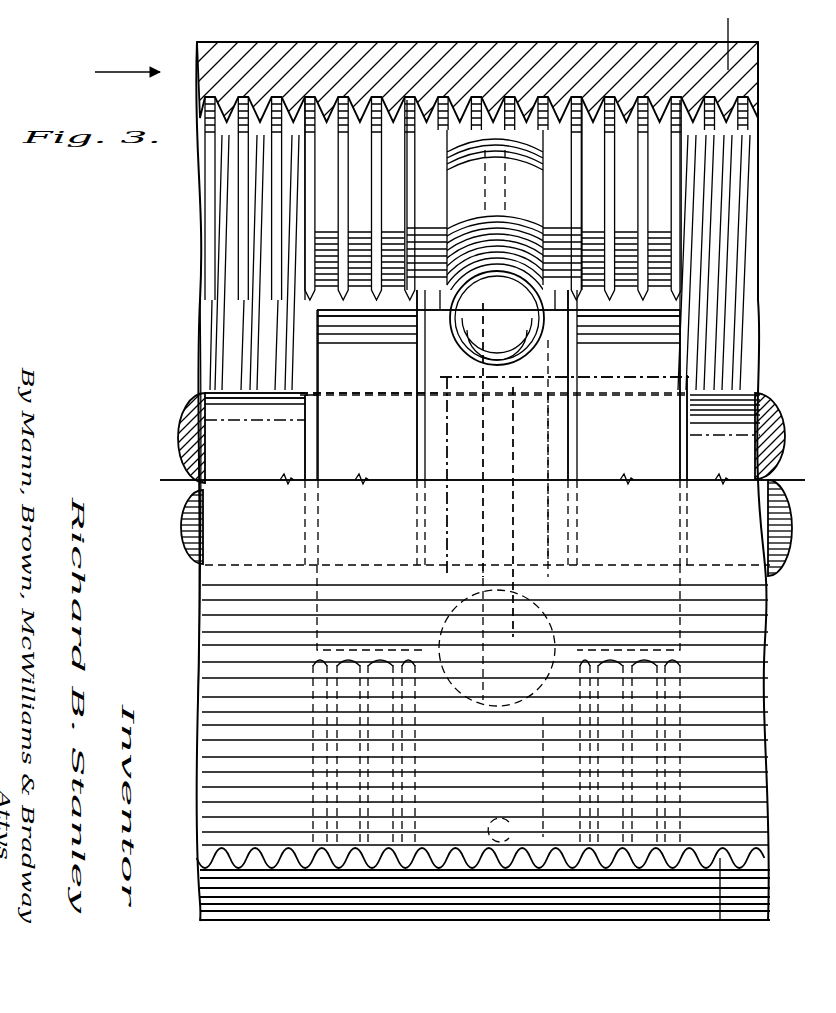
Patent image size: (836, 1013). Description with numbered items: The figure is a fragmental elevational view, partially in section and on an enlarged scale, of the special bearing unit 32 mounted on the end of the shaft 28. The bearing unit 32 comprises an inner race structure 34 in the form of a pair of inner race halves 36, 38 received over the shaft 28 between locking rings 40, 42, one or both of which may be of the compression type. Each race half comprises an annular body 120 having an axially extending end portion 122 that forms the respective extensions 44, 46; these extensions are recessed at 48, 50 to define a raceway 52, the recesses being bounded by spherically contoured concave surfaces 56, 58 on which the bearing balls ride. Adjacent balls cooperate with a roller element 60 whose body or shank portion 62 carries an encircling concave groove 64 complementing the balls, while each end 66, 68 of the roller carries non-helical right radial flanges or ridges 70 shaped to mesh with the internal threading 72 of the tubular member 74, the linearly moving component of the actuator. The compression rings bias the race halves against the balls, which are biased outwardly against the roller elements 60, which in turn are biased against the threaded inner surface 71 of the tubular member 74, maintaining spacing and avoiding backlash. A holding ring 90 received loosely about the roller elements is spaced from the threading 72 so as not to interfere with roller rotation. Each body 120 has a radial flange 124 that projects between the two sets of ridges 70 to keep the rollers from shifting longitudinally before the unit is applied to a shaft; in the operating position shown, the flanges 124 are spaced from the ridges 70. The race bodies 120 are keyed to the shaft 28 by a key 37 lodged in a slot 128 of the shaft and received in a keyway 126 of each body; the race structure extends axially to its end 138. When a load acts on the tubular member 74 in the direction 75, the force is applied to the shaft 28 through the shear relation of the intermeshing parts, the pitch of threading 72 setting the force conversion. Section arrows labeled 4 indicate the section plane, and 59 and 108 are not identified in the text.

The section line 4- 4 is at (702, 27).
The shaft 28 is at (735, 402).
The bearing unit 32 is at (292, 289).
The inner race structure 34 is at (395, 473).
The inner race half 36 is at (345, 447).
The key 37 is at (545, 372).
The inner race half 38 is at (650, 454).
The locking ring 40 is at (300, 432).
The locking ring 42 is at (760, 432).
The extension 44 is at (432, 408).
The extension 46 is at (556, 400).
The recess 48 is at (465, 452).
The recess 50 is at (540, 462).
The raceway 52 is at (470, 470).
The spherically contoured concave surface 56 is at (462, 432).
The spherically contoured concave surface 58 is at (540, 424).
The ball 59 is at (470, 320).
The roller element 60 is at (422, 148).
The body or shank portion 62 is at (560, 118).
The concave groove 64 is at (565, 132).
The end of roller element 66 is at (325, 192).
The end of roller element 68 is at (683, 193).
The radial flanges or ridges 70 is at (345, 152).
The threaded inner surface 71 is at (240, 98).
The internal threading 72 is at (740, 130).
The tubular member 74 is at (740, 66).
The direction of load 75 is at (122, 72).
The holding ring 90 is at (508, 128).
The sleeve body 108 is at (688, 312).
The annular body 120 is at (318, 350).
The axially extending end portion 122 is at (440, 366).
The radial flange 124 is at (598, 330).
The keyway 126 is at (697, 387).
The slot 128 is at (503, 512).
The end of race structure 138 is at (318, 310).